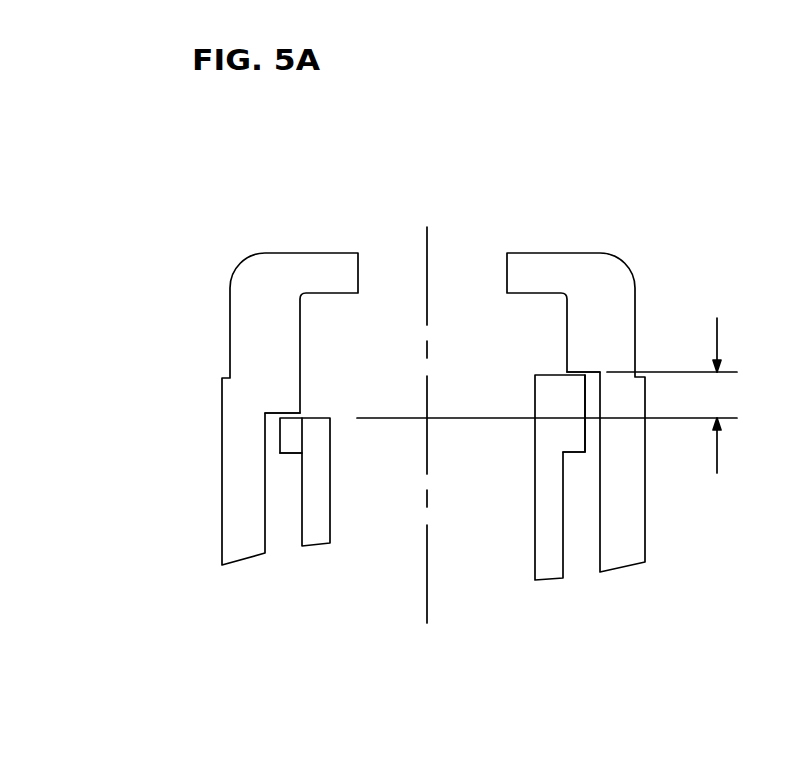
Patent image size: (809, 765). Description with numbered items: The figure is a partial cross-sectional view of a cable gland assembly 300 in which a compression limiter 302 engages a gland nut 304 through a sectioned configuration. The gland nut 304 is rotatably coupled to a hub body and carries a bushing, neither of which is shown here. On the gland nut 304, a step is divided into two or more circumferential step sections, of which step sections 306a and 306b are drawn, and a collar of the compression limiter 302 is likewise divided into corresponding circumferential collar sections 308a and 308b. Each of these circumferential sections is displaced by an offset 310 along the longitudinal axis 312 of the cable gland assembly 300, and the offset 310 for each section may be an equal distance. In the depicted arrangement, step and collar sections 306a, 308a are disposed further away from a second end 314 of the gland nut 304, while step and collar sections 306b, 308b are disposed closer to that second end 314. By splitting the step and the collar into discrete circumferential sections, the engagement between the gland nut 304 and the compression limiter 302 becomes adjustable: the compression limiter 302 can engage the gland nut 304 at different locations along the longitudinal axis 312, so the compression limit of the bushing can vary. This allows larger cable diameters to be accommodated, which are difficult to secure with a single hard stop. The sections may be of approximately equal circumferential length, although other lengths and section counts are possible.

The cable gland assembly 300 is at (672, 218).
The compression limiter 302 is at (302, 498).
The gland nut 304 is at (243, 263).
The circumferential step section 306a is at (277, 413).
The circumferential step section 306b is at (585, 372).
The circumferential collar section 308a is at (292, 422).
The circumferential collar section 308b is at (560, 378).
The offset 310 is at (672, 395).
The longitudinal axis 312 is at (425, 611).
The second end 314 is at (568, 252).